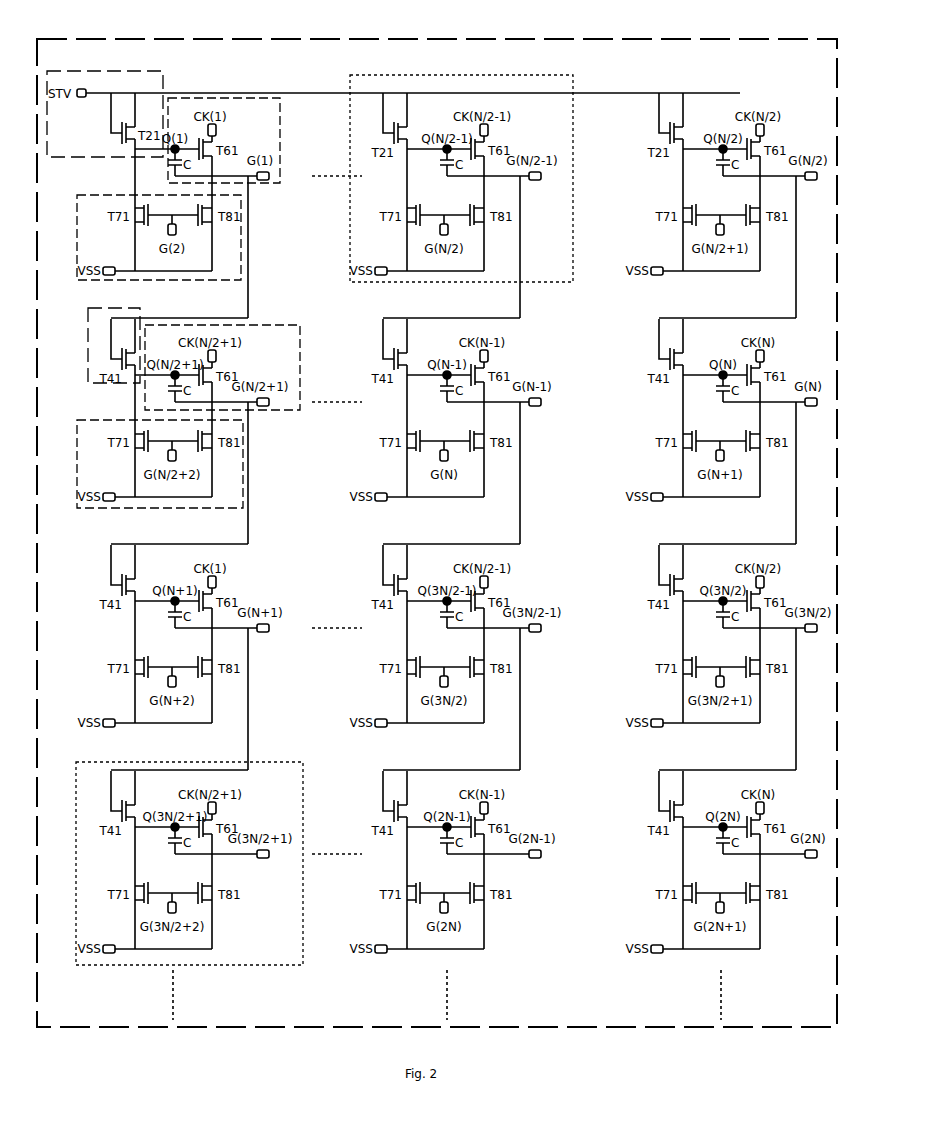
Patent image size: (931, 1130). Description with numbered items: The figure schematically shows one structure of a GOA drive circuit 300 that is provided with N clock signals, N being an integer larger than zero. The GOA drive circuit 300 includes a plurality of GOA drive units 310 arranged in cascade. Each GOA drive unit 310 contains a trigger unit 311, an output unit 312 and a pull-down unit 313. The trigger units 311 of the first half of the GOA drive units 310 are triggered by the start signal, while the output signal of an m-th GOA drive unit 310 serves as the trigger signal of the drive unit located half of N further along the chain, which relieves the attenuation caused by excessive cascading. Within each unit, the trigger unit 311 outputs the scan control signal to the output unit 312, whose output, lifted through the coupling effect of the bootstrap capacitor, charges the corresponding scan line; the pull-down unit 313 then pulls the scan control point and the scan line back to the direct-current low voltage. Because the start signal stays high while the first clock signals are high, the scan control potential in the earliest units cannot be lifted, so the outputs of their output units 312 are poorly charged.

The GOA drive circuit 300 is at (435, 39).
The GOA drive unit 310 is at (463, 75).
The trigger unit 311 is at (98, 71).
The output unit 312 is at (209, 98).
The pull-down module 313 is at (77, 236).